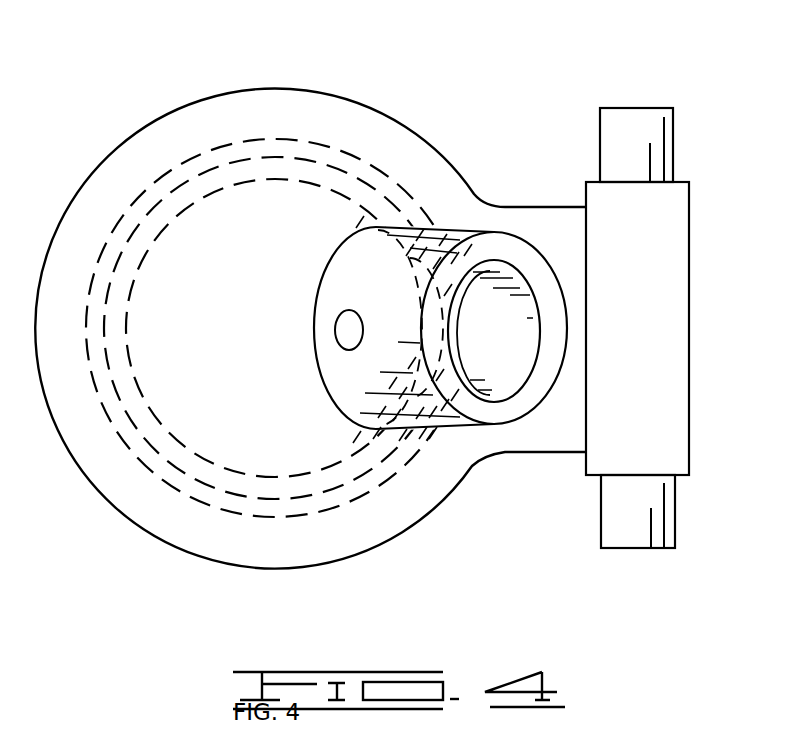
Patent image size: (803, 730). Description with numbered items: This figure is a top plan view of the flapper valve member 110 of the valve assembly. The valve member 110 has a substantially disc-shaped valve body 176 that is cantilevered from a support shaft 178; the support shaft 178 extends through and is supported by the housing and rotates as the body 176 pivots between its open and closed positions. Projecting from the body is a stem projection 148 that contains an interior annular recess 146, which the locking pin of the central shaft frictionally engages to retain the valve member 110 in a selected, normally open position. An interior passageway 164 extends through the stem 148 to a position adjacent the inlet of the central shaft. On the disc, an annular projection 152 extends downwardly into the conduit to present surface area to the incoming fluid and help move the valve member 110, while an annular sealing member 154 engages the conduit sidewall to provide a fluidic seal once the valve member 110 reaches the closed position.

The valve member 110 is at (252, 74).
The annular recess 146 is at (517, 306).
The stem projection 148 is at (509, 402).
The annular projection 152 is at (180, 225).
The annular sealing member 154 is at (200, 157).
The interior passageway 164 is at (347, 338).
The valve body 176 is at (143, 507).
The support shaft 178 is at (627, 118).